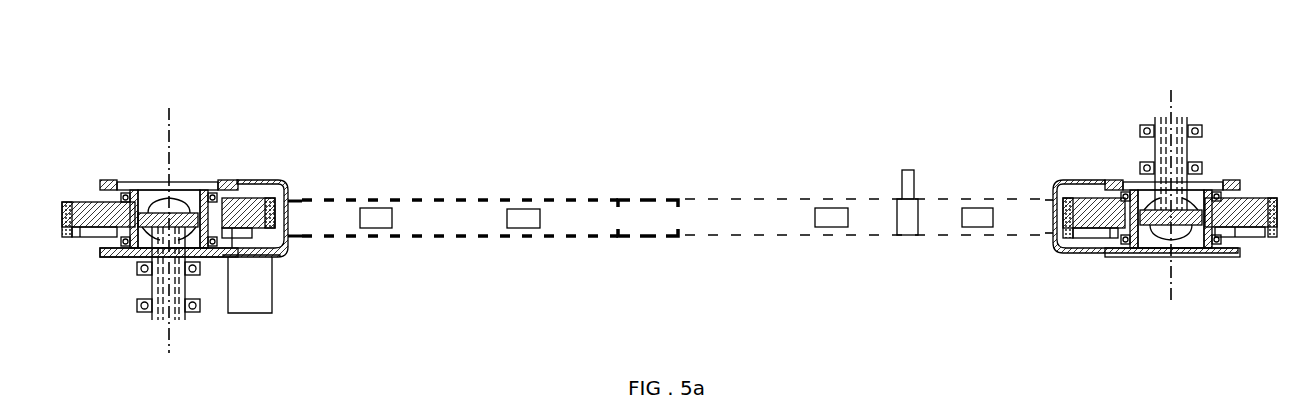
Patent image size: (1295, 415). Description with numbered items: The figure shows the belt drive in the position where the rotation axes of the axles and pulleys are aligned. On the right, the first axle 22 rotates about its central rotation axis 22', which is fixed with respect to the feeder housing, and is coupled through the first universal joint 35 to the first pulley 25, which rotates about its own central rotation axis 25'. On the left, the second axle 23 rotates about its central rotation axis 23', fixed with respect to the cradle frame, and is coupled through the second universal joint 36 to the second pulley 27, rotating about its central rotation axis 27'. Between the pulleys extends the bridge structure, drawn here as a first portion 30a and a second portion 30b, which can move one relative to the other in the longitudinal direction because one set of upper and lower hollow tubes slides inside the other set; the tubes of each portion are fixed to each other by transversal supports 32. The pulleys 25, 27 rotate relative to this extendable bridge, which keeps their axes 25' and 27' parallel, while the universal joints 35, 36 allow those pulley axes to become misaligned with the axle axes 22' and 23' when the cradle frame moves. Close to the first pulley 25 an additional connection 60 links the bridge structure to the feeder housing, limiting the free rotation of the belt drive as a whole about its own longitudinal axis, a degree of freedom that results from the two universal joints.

The first axle 22 is at (1206, 163).
The central rotation axis of the first axle 22' is at (1119, 162).
The second axle 23 is at (137, 273).
The central rotation axis of the second axle 23' is at (206, 356).
The first pulley 25 is at (1156, 178).
The central rotation axis of the first pulley 25' is at (1123, 312).
The second pulley 27 is at (182, 223).
The central rotation axis of the second pulley 27' is at (217, 216).
The first portion of the bridge structure 30a is at (737, 199).
The second portion of the bridge structure 30b is at (507, 200).
The transversal supports 32 is at (378, 213).
The first universal joint 35 is at (1155, 205).
The second universal joint 36 is at (157, 210).
The additional connection 60 is at (908, 183).